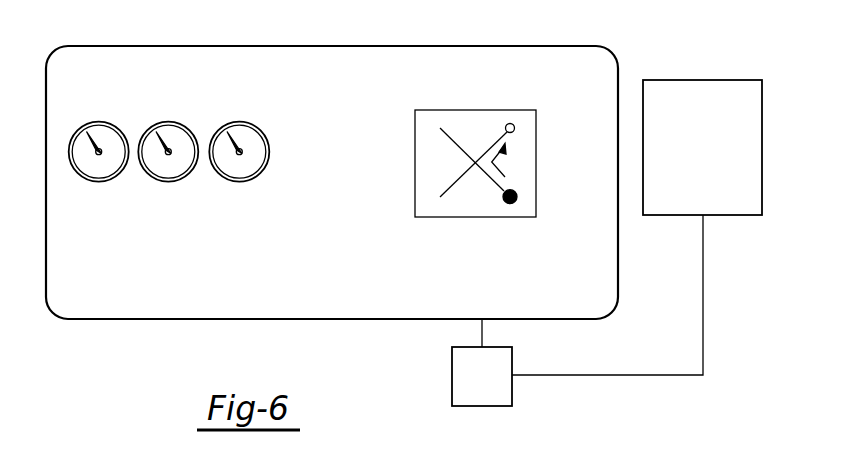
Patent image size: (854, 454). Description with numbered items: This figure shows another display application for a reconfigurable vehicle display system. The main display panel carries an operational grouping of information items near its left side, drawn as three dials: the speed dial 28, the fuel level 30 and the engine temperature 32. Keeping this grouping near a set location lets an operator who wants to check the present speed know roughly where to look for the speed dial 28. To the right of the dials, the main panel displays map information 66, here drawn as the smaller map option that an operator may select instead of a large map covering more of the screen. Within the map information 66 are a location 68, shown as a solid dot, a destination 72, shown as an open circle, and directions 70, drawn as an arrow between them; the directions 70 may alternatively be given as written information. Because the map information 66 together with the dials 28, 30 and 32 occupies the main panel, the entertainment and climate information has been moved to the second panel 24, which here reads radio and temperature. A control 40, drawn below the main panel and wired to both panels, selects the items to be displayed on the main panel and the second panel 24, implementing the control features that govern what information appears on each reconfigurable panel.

The second panel 24 is at (683, 100).
The speed dial 28 is at (100, 133).
The fuel level 30 is at (175, 132).
The engine temperature 32 is at (245, 132).
The control 40 is at (482, 376).
The map information 66 is at (429, 112).
The location 68 is at (517, 197).
The directions 70 is at (492, 162).
The destination 72 is at (512, 123).